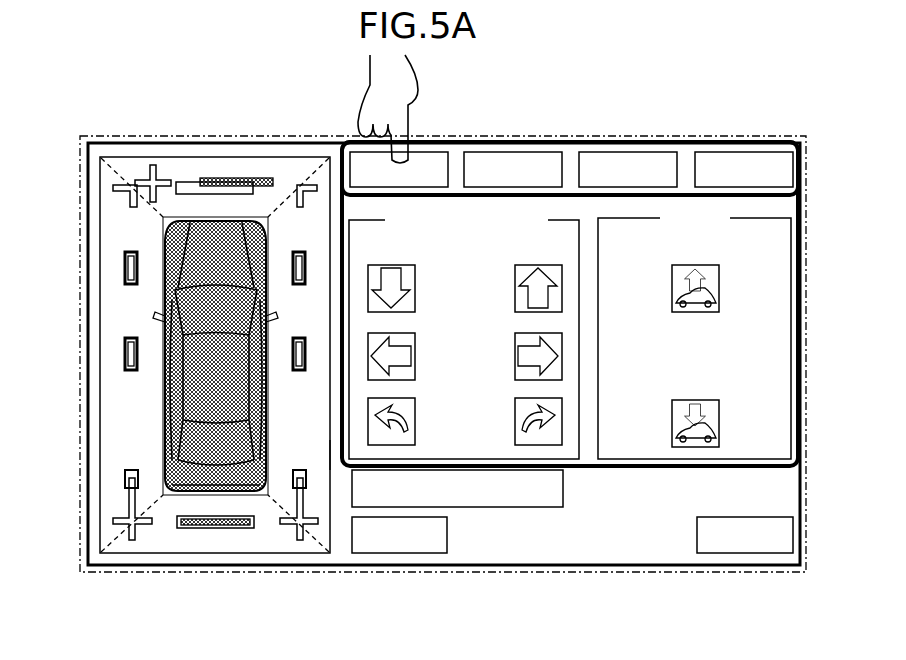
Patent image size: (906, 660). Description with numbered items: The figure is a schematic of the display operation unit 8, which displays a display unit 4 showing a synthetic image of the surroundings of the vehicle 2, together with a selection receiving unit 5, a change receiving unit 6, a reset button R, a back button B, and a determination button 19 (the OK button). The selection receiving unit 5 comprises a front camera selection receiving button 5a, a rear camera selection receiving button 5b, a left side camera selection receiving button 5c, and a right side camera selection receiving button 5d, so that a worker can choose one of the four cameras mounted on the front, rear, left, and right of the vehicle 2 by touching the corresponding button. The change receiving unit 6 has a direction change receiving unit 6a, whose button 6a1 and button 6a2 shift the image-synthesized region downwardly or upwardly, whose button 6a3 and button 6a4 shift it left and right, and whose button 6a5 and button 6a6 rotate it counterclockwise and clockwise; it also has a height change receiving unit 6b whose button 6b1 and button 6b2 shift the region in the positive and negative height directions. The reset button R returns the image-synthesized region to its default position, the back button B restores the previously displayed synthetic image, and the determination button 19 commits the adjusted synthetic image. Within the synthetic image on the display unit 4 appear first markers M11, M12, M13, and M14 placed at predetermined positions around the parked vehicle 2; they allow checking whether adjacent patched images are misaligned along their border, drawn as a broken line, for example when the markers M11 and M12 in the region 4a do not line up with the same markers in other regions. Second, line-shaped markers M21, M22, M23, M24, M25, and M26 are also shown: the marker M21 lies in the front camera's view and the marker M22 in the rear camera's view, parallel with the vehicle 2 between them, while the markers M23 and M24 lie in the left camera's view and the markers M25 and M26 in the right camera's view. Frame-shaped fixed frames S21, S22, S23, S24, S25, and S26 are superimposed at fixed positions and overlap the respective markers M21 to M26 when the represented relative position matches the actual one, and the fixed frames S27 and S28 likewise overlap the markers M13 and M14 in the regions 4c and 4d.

The vehicle 2 is at (163, 445).
The display unit 4 is at (123, 155).
The region 4a is at (172, 167).
The region 4c is at (118, 408).
The region 4d is at (335, 455).
The selection receiving unit 5 is at (607, 142).
The front camera selection receiving button 5a is at (430, 150).
The rear camera selection receiving button 5b is at (537, 150).
The left side camera selection receiving button 5c is at (655, 150).
The right side camera selection receiving button 5d is at (770, 150).
The display operation unit 8 is at (720, 140).
The change receiving unit 6 is at (640, 468).
The direction change receiving unit 6a is at (580, 465).
The button 6a1 is at (416, 274).
The button 6a2 is at (514, 304).
The button 6a3 is at (416, 342).
The button 6a4 is at (514, 372).
The button 6a5 is at (416, 407).
The button 6a6 is at (514, 440).
The height change receiving unit 6b is at (682, 467).
The button 6b1 is at (719, 288).
The button 6b2 is at (719, 423).
The reset button R is at (530, 508).
The back button B is at (413, 554).
The determination button 19 is at (752, 554).
The marker M11 is at (148, 170).
The marker M12 is at (292, 197).
The marker M13 is at (113, 521).
The marker M14 is at (300, 541).
The marker M21 is at (257, 178).
The marker M22 is at (197, 529).
The marker M23 is at (124, 276).
The marker M24 is at (124, 362).
The marker M25 is at (305, 260).
The marker M26 is at (303, 523).
The fixed frame S21 is at (188, 182).
The fixed frame S22 is at (243, 529).
The fixed frame S23 is at (124, 263).
The fixed frame S24 is at (124, 349).
The fixed frame S25 is at (305, 267).
The fixed frame S26 is at (312, 372).
The fixed frame S27 is at (124, 477).
The fixed frame S28 is at (296, 488).